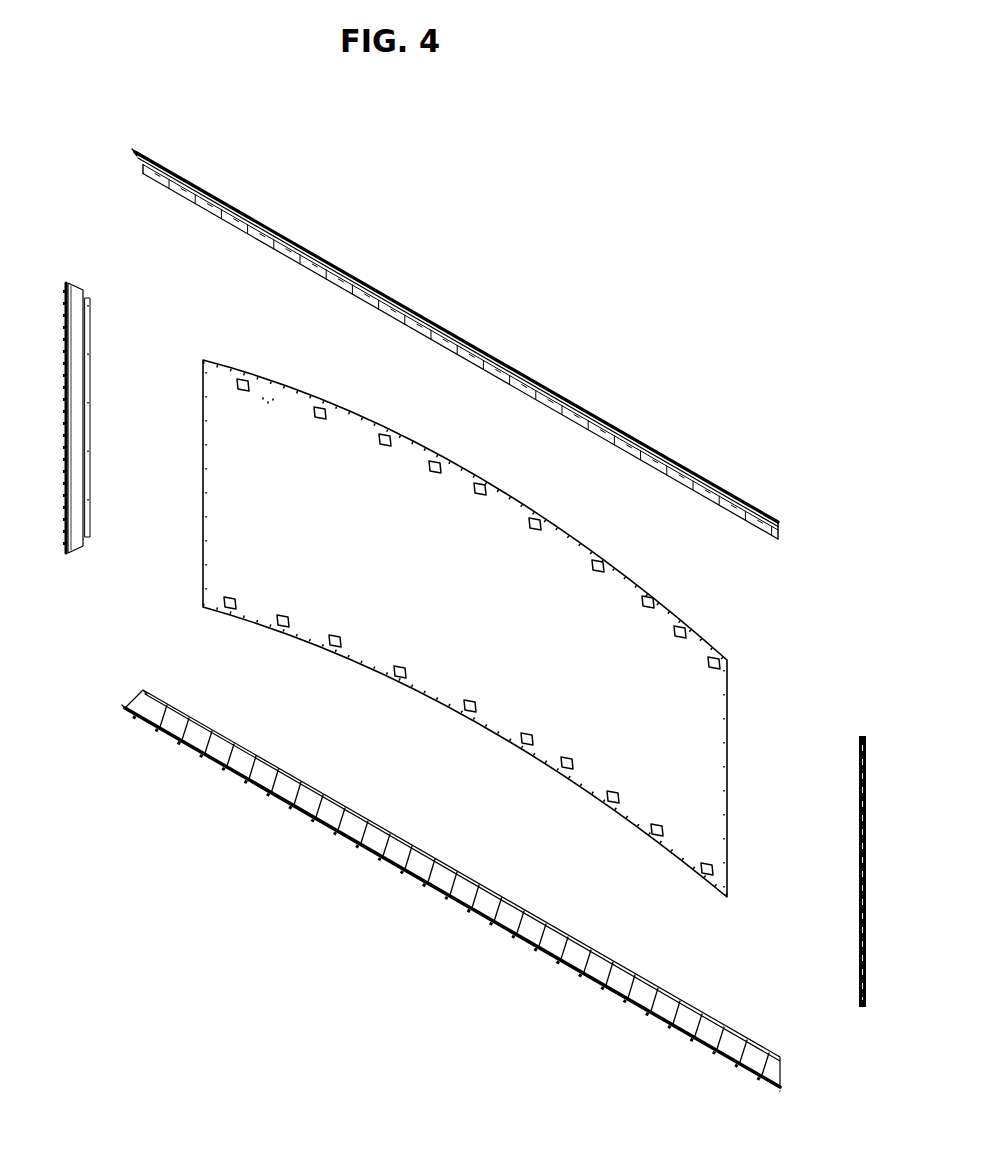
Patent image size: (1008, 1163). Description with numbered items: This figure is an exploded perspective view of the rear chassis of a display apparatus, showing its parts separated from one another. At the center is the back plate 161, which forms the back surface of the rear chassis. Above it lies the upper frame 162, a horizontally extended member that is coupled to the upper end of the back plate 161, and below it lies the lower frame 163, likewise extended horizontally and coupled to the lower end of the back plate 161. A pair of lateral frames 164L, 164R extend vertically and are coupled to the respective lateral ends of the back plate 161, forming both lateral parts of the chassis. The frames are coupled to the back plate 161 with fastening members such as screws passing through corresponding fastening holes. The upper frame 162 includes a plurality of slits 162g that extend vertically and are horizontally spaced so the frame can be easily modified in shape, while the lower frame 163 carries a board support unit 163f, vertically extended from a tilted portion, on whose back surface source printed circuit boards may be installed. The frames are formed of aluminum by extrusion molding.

The back plate 161 is at (722, 720).
The upper frame 162 is at (455, 344).
The slits 162g is at (503, 378).
The lower frame 163 is at (451, 890).
The board support unit 163f is at (523, 918).
The lateral frame 164L is at (85, 403).
The lateral frame 164R is at (858, 868).